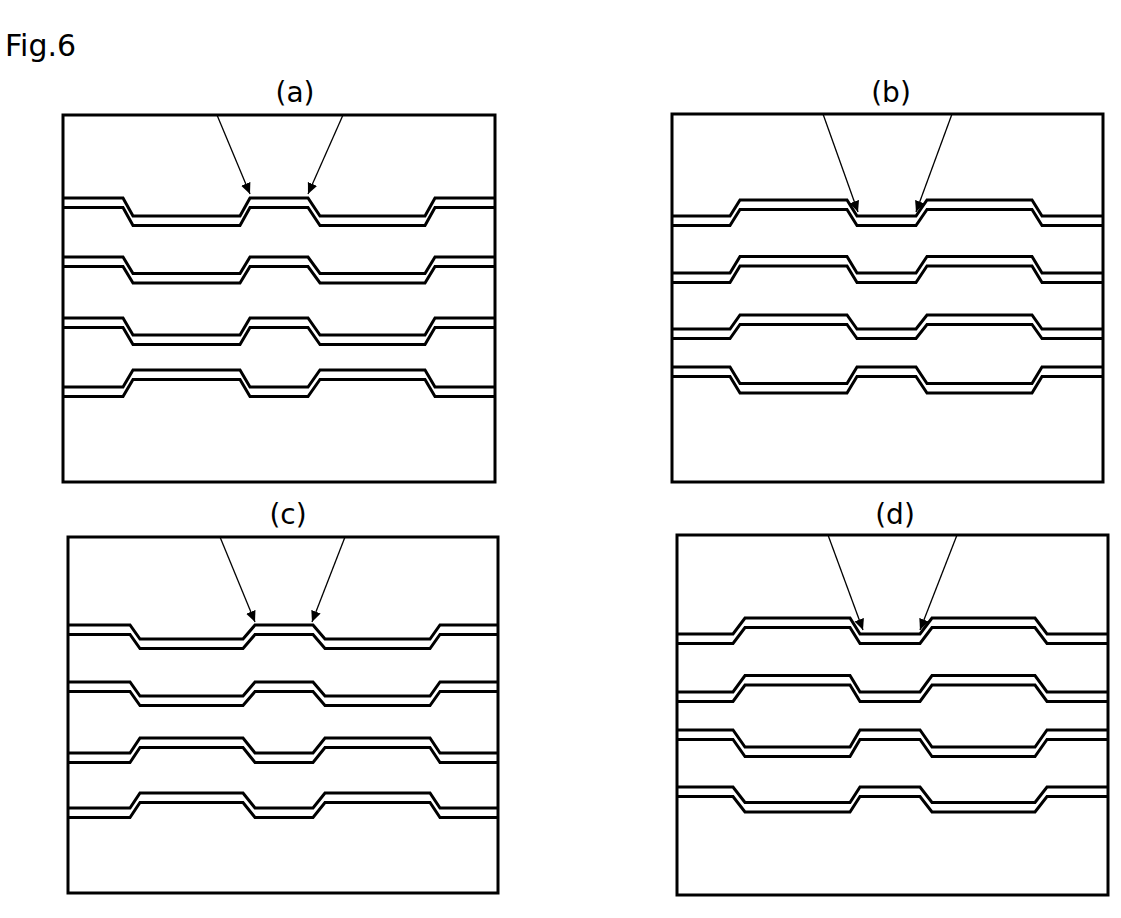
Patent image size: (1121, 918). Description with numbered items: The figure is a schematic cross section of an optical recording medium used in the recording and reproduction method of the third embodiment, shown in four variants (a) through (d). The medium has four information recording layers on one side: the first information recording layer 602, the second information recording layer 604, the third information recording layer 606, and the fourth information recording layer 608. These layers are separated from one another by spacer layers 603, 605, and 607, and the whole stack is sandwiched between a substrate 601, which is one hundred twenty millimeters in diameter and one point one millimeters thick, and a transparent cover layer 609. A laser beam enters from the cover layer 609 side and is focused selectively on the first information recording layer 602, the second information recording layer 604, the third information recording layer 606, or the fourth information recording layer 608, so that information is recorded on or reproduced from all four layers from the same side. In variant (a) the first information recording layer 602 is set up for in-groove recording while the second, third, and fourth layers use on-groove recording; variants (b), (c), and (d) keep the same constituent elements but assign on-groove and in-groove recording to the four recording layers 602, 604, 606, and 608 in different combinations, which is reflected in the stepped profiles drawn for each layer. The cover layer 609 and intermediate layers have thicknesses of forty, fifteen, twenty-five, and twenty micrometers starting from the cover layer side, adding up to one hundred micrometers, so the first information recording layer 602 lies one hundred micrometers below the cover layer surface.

The substrate 601 is at (708, 427).
The first information recording layer 602 is at (688, 370).
The spacer layer 603 is at (683, 351).
The second information recording layer 604 is at (683, 331).
The spacer layer 605 is at (683, 307).
The third information recording layer 606 is at (670, 270).
The spacer layer 607 is at (680, 245).
The fourth information recording layer 608 is at (678, 217).
The cover layer 609 is at (703, 142).